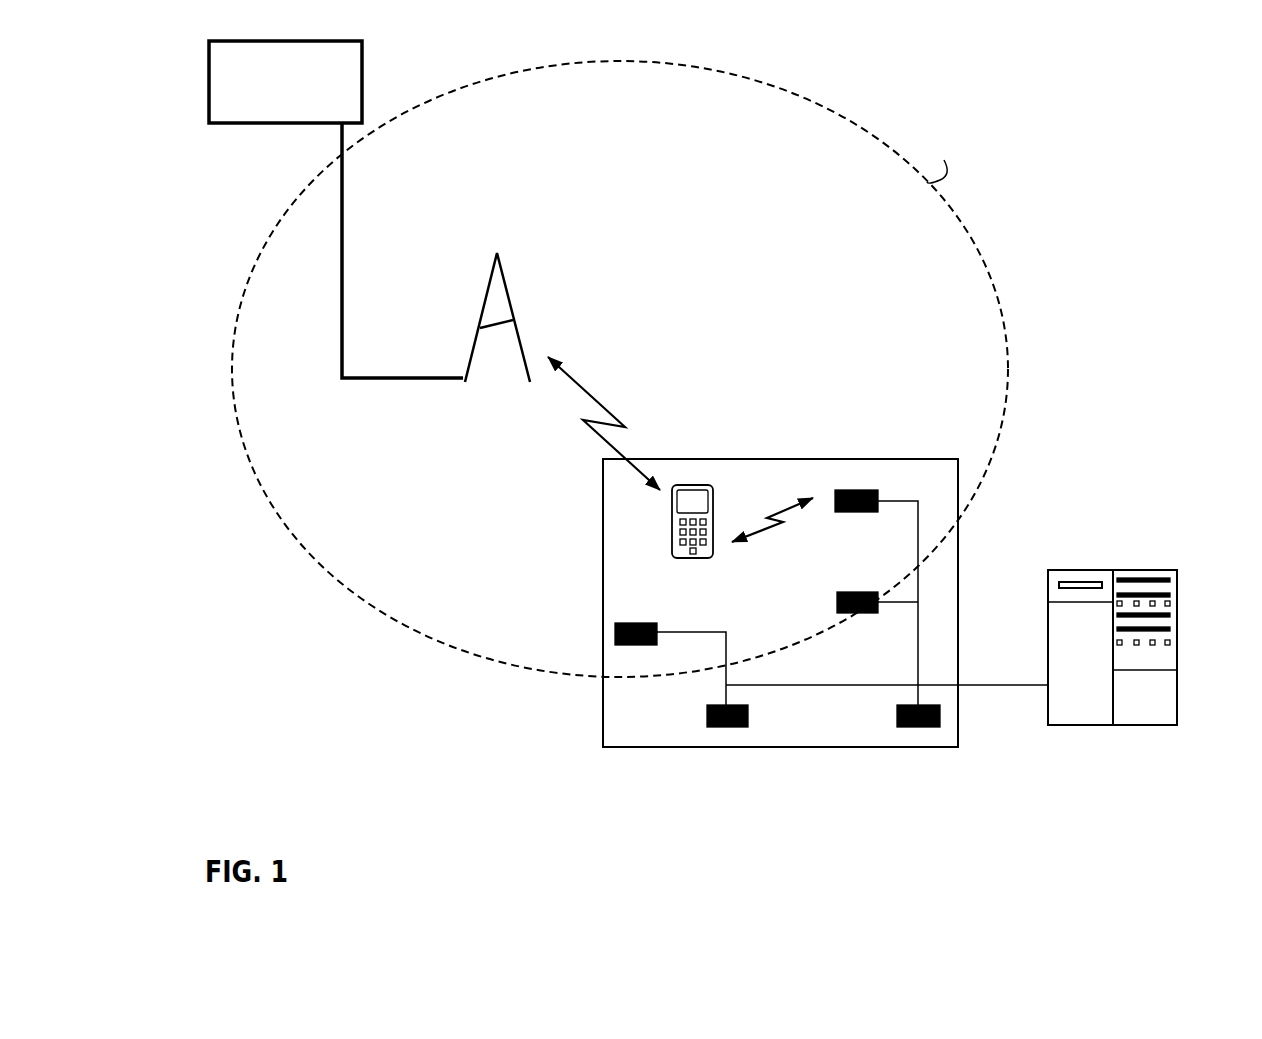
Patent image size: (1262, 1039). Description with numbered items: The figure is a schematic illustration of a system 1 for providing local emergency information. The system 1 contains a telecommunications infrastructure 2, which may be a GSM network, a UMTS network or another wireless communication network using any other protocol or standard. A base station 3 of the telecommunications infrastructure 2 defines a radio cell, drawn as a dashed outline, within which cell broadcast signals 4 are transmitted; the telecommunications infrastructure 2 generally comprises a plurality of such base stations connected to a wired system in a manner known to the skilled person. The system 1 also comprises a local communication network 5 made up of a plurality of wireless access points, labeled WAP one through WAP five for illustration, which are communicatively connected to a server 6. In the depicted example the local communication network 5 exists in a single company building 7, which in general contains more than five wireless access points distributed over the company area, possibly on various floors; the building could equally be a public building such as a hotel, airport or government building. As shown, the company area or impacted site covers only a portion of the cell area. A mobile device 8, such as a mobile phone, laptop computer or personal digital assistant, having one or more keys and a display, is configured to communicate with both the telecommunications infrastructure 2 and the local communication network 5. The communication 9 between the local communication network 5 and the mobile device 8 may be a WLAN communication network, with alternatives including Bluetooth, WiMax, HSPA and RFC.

The system 1 is at (1092, 335).
The telecommunications infrastructure 2 is at (424, 274).
The base station 3 is at (510, 292).
The cell broadcast signals 4 is at (598, 398).
The local communication network 5 is at (826, 669).
The server 6 is at (1177, 630).
The company building 7 is at (630, 748).
The mobile device 8 is at (715, 498).
The communication 9 is at (782, 510).